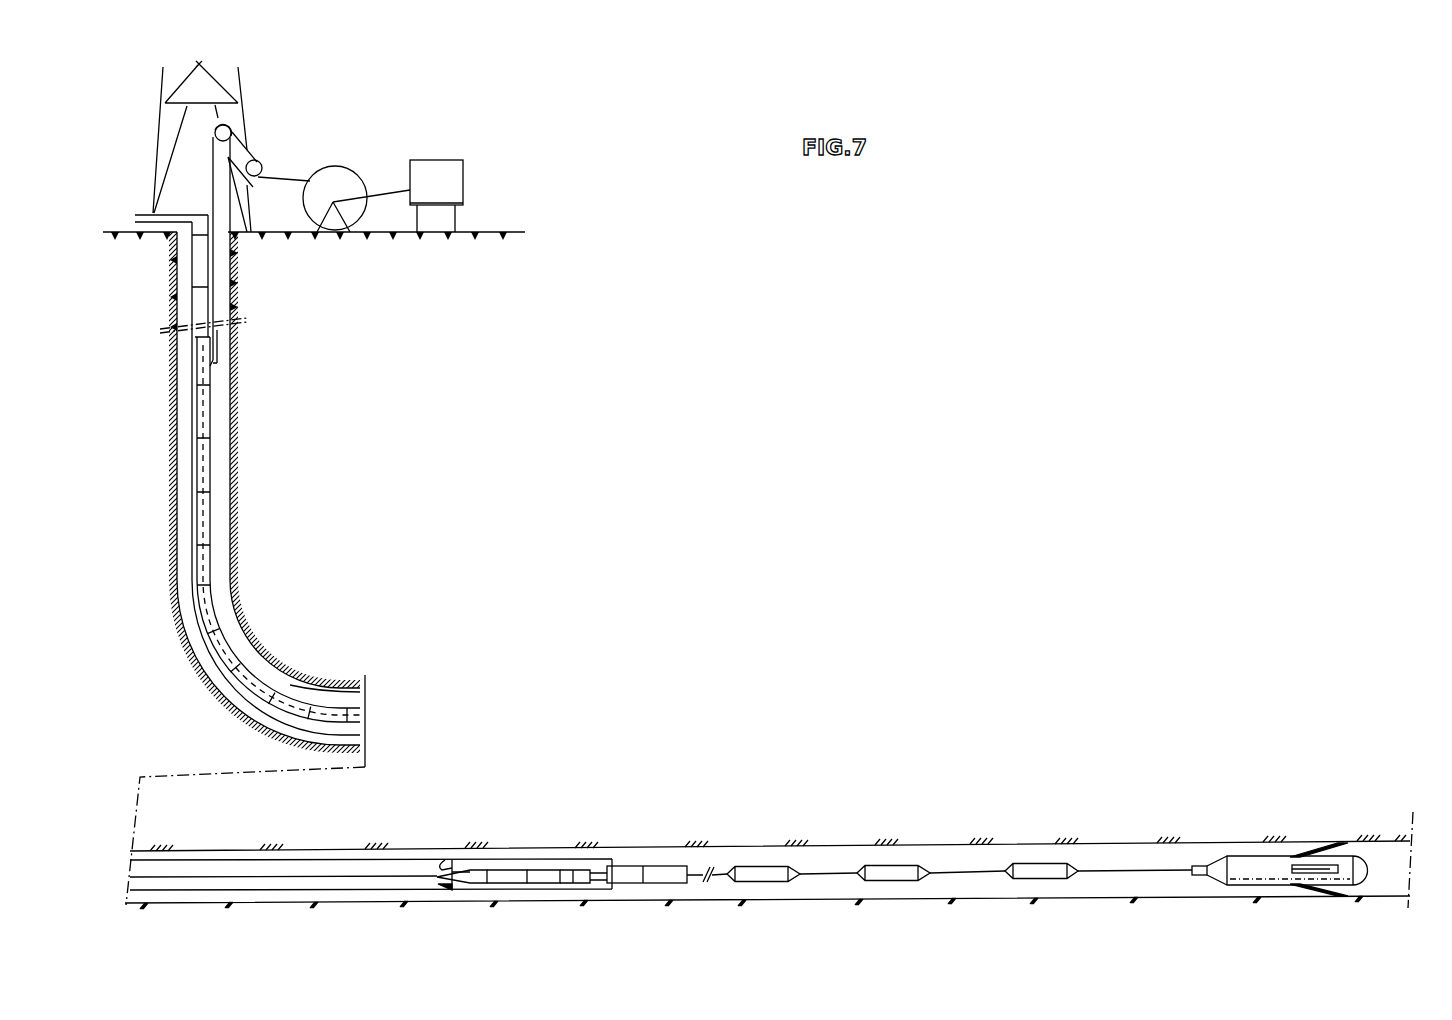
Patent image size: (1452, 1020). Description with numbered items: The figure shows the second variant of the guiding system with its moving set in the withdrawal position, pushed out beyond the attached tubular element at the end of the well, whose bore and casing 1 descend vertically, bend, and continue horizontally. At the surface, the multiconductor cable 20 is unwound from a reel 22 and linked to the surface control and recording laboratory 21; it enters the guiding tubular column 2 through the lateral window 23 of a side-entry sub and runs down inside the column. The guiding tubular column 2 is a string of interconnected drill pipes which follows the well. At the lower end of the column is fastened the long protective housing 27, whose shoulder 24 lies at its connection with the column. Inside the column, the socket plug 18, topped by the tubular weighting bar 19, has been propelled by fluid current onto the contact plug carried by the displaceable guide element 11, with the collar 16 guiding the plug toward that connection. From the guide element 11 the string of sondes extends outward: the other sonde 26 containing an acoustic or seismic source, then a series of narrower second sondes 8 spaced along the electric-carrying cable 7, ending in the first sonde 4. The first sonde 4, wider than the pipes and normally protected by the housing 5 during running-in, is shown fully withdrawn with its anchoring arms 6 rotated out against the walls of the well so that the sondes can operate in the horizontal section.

The casing 1 is at (222, 492).
The guiding tubular column 2 is at (215, 433).
The first sonde 4 is at (1260, 866).
The housing 5 is at (526, 870).
The anchoring arms 6 is at (1310, 850).
The electric-carrying cable 7 is at (830, 873).
The second sonde 8 is at (762, 866).
The displaceable guide element 11 is at (581, 870).
The collar 16 is at (432, 866).
The socket plug 18 is at (547, 868).
The tubular weighting bar 19 is at (488, 868).
The multiconductor cable 20 is at (215, 298).
The surface control and recording laboratory 21 is at (428, 160).
The reel 22 is at (338, 167).
The lateral window 23 is at (212, 372).
The shoulder 24 is at (450, 862).
The other sonde 26 is at (662, 868).
The protective housing 27 is at (312, 858).